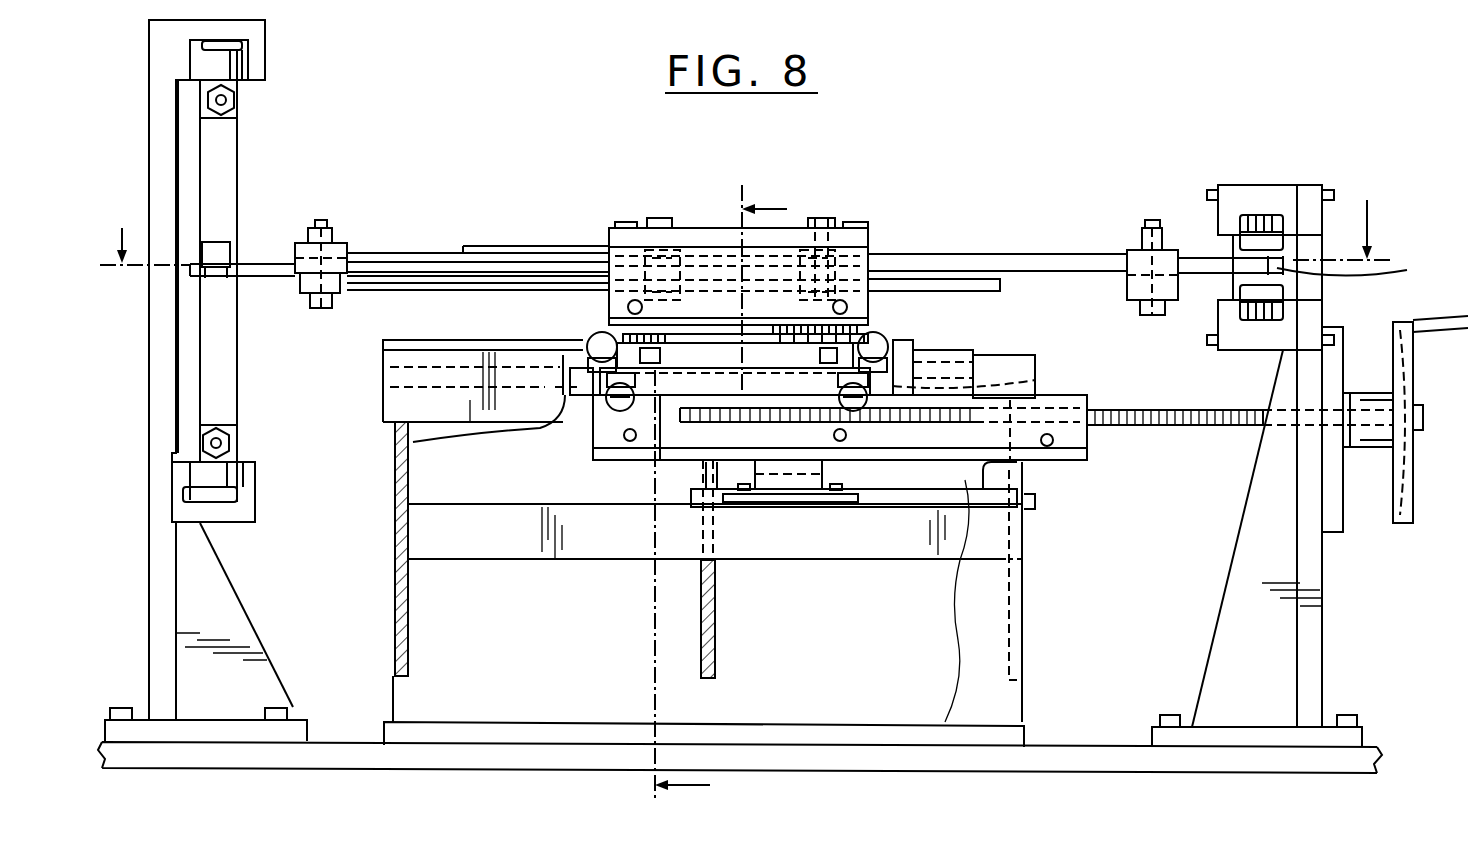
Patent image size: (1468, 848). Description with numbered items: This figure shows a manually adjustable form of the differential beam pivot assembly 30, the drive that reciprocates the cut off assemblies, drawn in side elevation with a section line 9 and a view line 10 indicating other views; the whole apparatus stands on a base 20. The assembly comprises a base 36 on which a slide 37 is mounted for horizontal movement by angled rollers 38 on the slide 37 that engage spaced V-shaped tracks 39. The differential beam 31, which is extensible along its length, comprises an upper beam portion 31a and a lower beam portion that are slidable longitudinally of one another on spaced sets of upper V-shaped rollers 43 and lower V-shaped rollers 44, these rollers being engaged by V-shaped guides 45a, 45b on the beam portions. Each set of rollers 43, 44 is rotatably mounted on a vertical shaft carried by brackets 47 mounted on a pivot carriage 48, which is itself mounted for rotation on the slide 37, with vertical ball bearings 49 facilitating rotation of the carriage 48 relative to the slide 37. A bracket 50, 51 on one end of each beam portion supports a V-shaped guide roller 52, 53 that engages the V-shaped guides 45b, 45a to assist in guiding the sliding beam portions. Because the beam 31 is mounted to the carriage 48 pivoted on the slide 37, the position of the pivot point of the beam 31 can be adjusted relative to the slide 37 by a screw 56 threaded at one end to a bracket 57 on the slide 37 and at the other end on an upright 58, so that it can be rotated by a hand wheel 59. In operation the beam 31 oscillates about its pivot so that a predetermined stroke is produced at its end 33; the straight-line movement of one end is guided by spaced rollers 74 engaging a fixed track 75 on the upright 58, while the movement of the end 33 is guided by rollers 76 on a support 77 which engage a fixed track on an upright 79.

The section line 9- 9 is at (722, 499).
The view line 10 is at (748, 214).
The base 20 is at (1088, 747).
The differential beam pivot assembly 30 is at (820, 214).
The differential beam 31 is at (1012, 233).
The upper beam portion 31a is at (406, 252).
The end of the differential beam 33 is at (242, 370).
The base 36 is at (403, 435).
The slide 37 is at (725, 392).
The angled rollers 38 is at (590, 342).
The V-shaped tracks 39 is at (577, 384).
The upper V-shaped rollers 43 is at (677, 237).
The lower V-shaped rollers 44 is at (600, 300).
The V-shaped guide 45a is at (496, 247).
The V-shaped guide 45b is at (482, 290).
The brackets 47 is at (748, 253).
The pivot carriage 48 is at (878, 343).
The vertical ball bearings 49 is at (658, 357).
The bracket 50 is at (332, 264).
The bracket 51 is at (1168, 292).
The V-shaped guide roller 52 is at (340, 293).
The V-shaped guide roller 53 is at (1136, 274).
The screw 56 is at (1128, 420).
The bracket 57 is at (1000, 386).
The upright 58 is at (1226, 622).
The hand wheel 59 is at (1401, 524).
The spaced rollers 74 is at (1275, 215).
The fixed track 75 is at (1366, 272).
The rollers 76 is at (240, 80).
The support 77 is at (232, 178).
The upright 79 is at (240, 628).